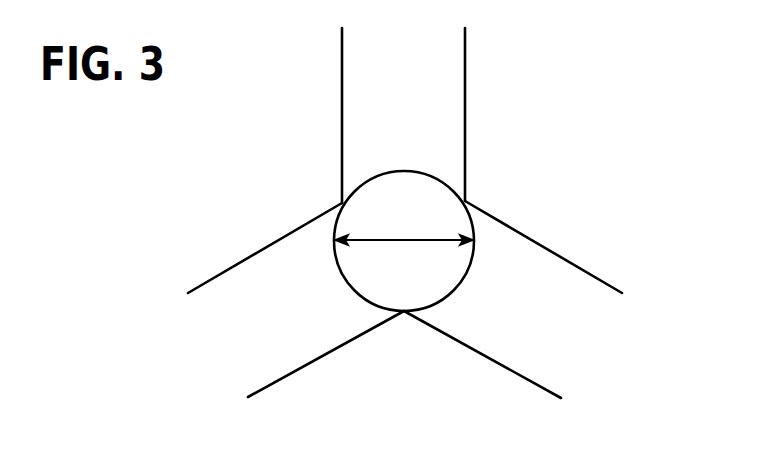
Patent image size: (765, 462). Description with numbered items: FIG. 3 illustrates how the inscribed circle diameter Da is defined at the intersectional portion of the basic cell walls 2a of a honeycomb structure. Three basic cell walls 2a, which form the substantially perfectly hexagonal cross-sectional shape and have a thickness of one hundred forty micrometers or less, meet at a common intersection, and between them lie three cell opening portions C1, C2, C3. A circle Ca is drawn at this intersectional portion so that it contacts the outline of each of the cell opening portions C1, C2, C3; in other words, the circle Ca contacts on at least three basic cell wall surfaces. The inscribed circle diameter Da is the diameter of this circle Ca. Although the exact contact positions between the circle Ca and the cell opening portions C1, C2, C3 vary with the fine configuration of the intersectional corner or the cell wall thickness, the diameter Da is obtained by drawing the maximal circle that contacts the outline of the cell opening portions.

The basic cell walls 2a is at (430, 75).
The circle Ca is at (438, 177).
The inscribed circle diameter Da is at (404, 254).
The cell opening portion C1 is at (282, 188).
The cell opening portion C2 is at (550, 188).
The cell opening portion C3 is at (422, 392).